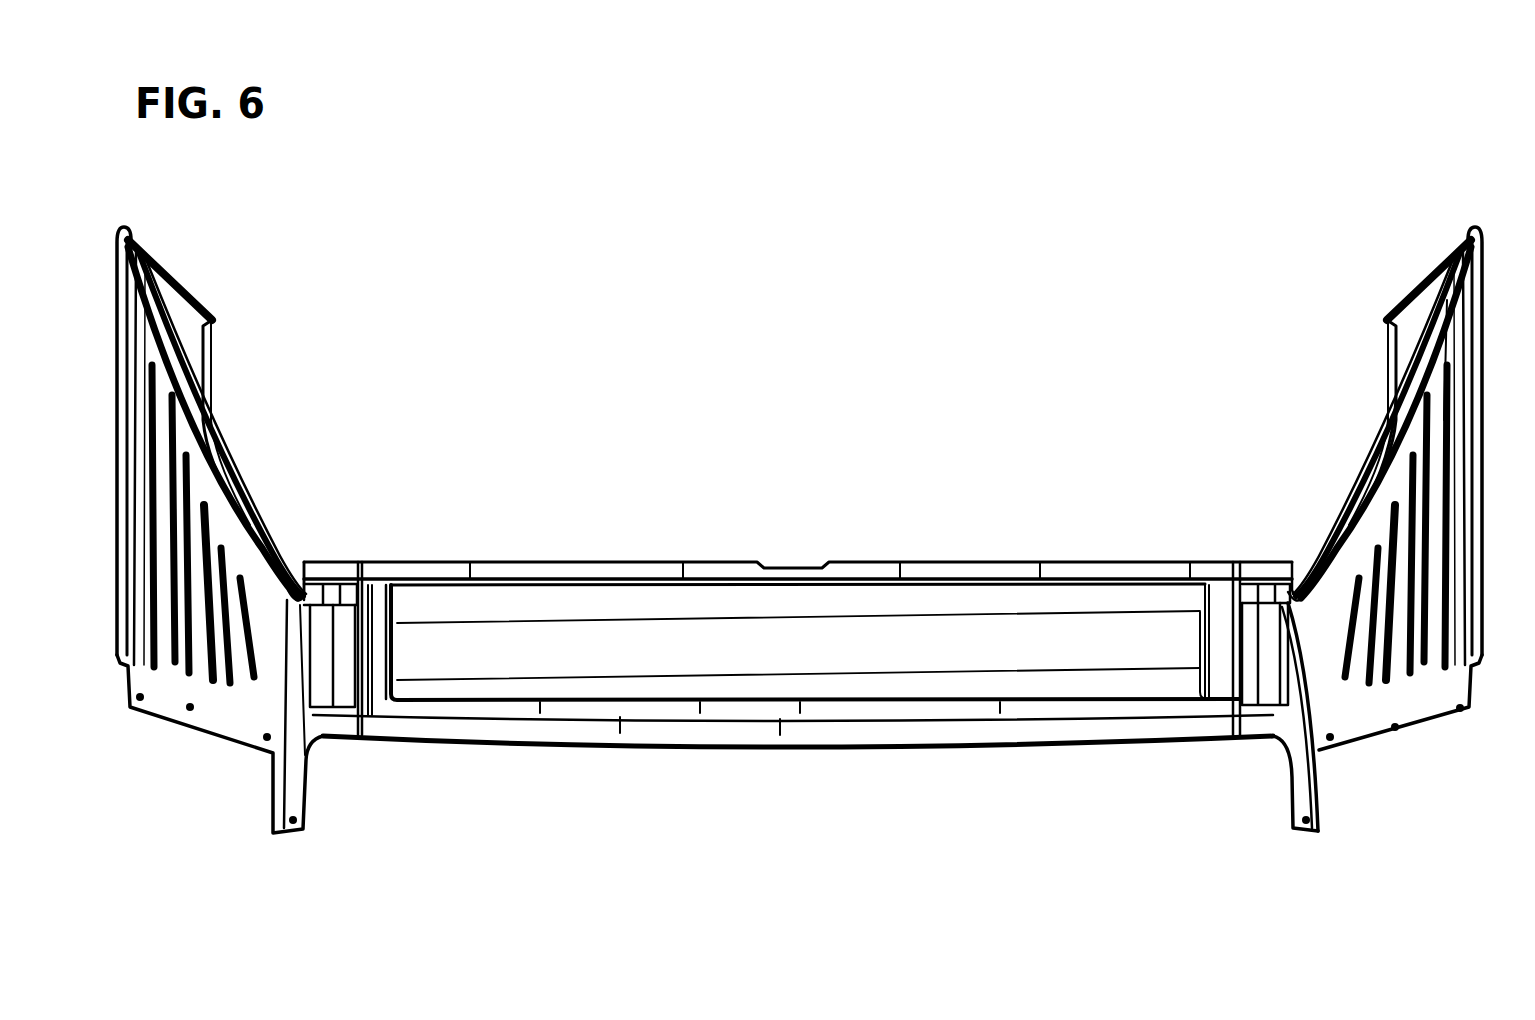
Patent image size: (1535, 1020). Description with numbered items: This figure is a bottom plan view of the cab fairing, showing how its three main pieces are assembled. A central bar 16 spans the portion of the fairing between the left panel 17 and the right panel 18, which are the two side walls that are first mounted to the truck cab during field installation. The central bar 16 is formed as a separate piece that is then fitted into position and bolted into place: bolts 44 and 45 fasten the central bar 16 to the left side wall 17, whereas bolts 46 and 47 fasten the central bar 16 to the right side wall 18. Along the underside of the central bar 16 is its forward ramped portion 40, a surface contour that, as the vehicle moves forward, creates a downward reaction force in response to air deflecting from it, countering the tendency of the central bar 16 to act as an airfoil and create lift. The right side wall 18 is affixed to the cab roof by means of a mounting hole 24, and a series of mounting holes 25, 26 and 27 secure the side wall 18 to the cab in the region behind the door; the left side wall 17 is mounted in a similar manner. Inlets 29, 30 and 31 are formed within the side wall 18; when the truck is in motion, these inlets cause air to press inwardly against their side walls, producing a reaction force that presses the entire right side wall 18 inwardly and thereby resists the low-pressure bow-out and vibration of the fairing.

The central bar 16 is at (791, 567).
The left panel 17 is at (133, 240).
The right panel 18 is at (1464, 234).
The mounting hole 24 is at (1306, 818).
The mounting hole 25 is at (1330, 742).
The mounting hole 26 is at (1396, 732).
The mounting hole 27 is at (1463, 714).
The inlet 29 is at (1356, 531).
The inlet 30 is at (1388, 484).
The inlet 31 is at (1448, 406).
The forward ramped portion 40 is at (770, 735).
The bolt 44 is at (373, 621).
The bolt 45 is at (374, 680).
The bolt 46 is at (1228, 612).
The bolt 47 is at (1220, 702).